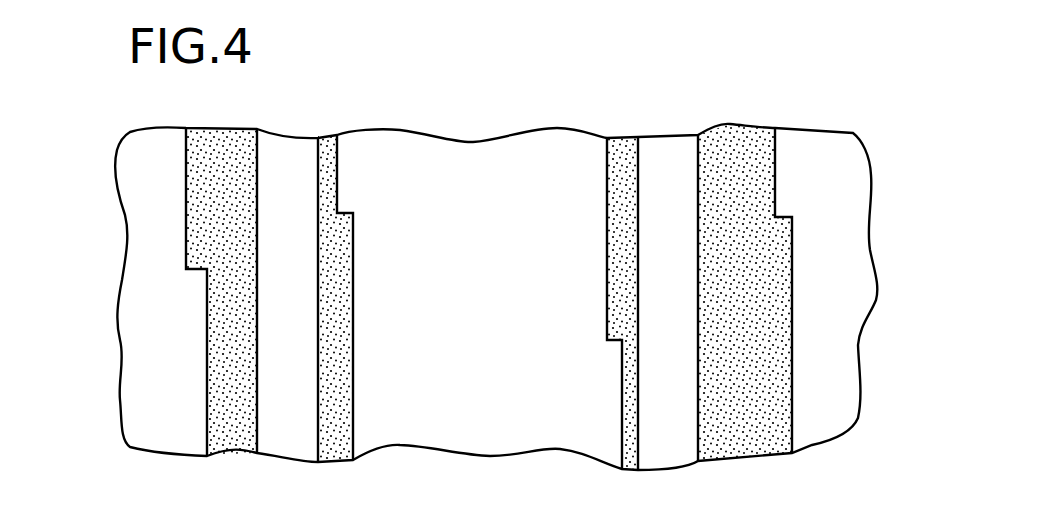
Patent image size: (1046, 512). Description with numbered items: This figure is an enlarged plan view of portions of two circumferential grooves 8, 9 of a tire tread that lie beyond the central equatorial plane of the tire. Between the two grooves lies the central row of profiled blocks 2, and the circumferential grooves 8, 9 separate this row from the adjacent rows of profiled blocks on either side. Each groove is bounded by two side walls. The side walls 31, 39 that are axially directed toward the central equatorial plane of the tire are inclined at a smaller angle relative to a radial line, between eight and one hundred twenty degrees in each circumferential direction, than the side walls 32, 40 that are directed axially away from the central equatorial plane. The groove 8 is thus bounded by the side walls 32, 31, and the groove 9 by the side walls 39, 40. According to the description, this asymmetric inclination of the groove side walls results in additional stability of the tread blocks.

The central row of profiled blocks 2 is at (434, 165).
The circumferential groove 8 is at (290, 160).
The circumferential groove 9 is at (660, 162).
The side wall 31 is at (340, 364).
The side wall 32 is at (203, 208).
The side wall 39 is at (612, 217).
The side wall 40 is at (772, 332).